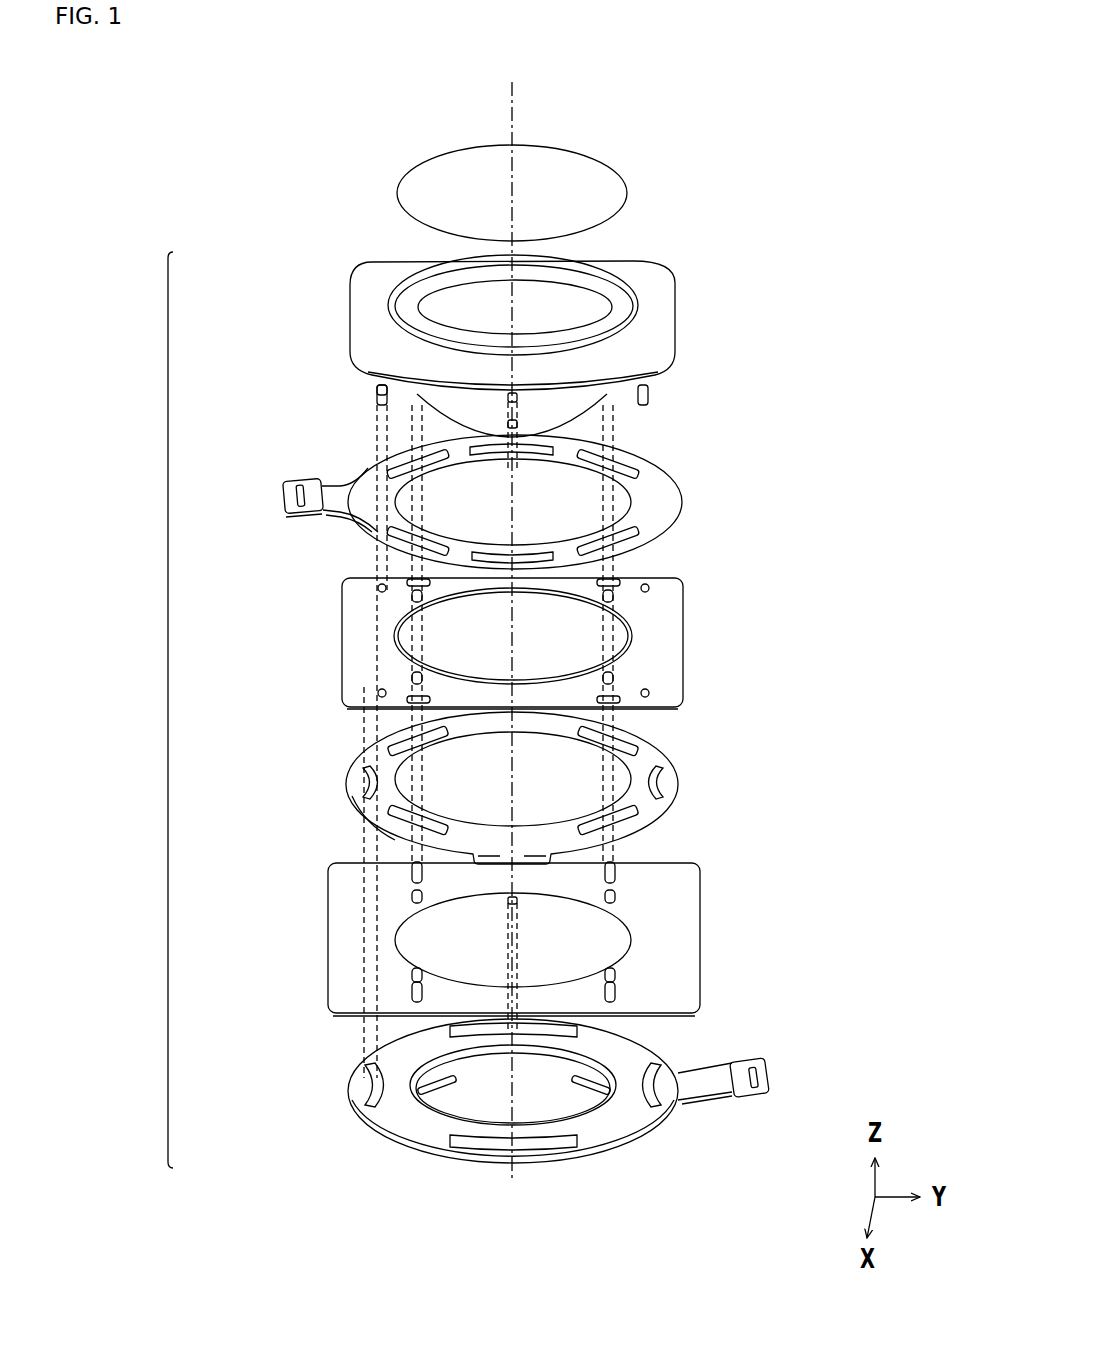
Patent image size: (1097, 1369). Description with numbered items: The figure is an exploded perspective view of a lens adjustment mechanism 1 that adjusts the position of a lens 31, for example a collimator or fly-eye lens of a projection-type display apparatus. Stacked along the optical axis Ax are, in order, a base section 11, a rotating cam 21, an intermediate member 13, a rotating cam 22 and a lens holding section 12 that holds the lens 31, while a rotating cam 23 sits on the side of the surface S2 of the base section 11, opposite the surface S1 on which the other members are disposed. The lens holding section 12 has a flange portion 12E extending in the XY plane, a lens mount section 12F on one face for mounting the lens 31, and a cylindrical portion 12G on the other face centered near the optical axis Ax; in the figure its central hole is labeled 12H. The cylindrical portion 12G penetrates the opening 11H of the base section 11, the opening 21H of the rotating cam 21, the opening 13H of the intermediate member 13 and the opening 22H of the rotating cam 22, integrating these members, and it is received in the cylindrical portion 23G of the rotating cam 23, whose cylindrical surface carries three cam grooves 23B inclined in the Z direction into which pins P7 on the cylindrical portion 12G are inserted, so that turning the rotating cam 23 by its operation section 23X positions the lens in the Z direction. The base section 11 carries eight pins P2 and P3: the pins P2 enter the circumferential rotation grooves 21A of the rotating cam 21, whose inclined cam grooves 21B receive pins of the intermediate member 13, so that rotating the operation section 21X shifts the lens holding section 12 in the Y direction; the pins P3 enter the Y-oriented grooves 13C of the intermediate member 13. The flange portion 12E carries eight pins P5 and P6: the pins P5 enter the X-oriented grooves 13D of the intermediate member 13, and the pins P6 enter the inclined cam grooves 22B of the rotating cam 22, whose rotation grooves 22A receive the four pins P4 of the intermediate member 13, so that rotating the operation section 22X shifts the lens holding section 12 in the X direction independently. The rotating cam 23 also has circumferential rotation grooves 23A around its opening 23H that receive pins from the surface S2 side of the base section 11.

The lens adjustment mechanism 1 is at (168, 706).
The surface S1 is at (322, 106).
The surface S2 is at (330, 1027).
The optical axis Ax is at (515, 110).
The lens 31 is at (620, 192).
The lens holding section 12 is at (655, 332).
The flange portion 12E is at (655, 303).
The lens mount section 12F is at (622, 268).
The through hole of upper case 12H is at (565, 312).
The cylindrical portion 12G is at (585, 405).
The pins P5 is at (375, 395).
The pins P6 is at (368, 365).
The pins P7 is at (505, 423).
The rotating cam 22 is at (665, 500).
The opening 22H is at (560, 494).
The rotation grooves 22A is at (390, 463).
The cam grooves 22B is at (540, 449).
The operation section 22X is at (284, 499).
The intermediate member 13 is at (672, 650).
The opening 13H is at (555, 640).
The grooves 13C is at (415, 579).
The grooves 13D is at (380, 589).
The pins P4 is at (412, 596).
The rotating cam 21 is at (665, 790).
The opening 21H is at (560, 772).
The rotation grooves 21A is at (395, 736).
The cam grooves 21B is at (372, 776).
The operation section 21X is at (375, 823).
The base section 11 is at (700, 955).
The opening 11H is at (570, 938).
The pins P2 is at (412, 896).
The pins P3 is at (412, 872).
The rotating cam 23 is at (640, 1118).
The opening 23H is at (540, 1090).
The rotation grooves 23A is at (365, 1085).
The cam grooves 23B is at (423, 1100).
The cylindrical portion 23G is at (528, 1158).
The operation section 23X is at (770, 1081).